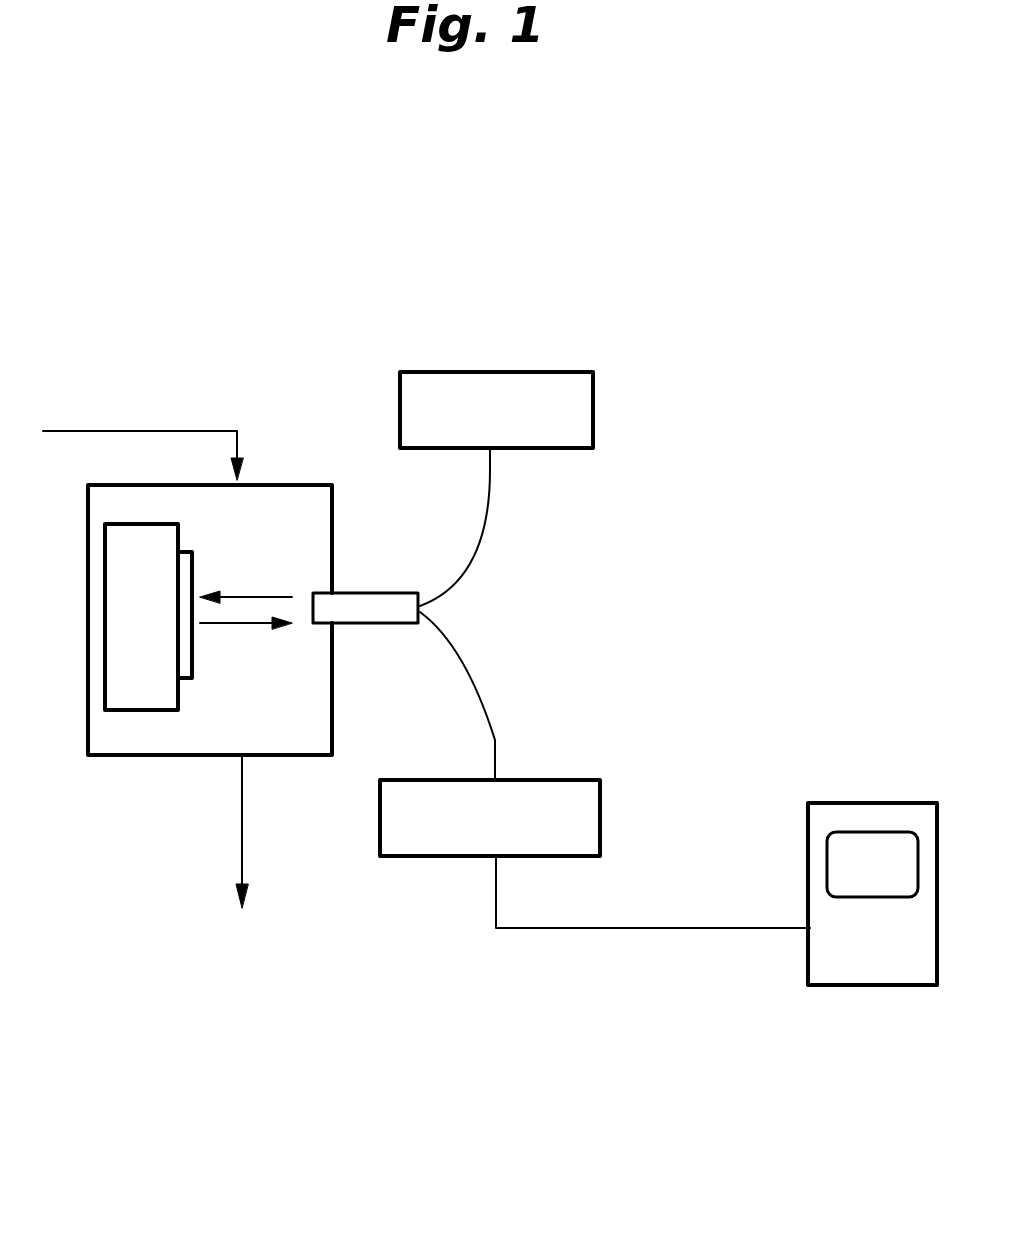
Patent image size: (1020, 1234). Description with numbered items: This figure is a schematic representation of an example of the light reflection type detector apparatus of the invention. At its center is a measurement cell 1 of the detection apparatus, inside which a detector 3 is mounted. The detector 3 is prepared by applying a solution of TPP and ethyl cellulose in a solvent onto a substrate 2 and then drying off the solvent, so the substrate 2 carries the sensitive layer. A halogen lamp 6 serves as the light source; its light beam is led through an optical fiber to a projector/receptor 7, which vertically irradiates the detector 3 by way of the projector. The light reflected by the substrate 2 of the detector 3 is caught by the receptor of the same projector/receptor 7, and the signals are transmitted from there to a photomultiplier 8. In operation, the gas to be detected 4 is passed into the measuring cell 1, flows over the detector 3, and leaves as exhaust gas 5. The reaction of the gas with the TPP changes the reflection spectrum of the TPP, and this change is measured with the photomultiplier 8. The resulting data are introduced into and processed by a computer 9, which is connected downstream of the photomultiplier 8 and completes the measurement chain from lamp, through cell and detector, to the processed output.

The measurement cell 1 is at (88, 512).
The substrate 2 is at (105, 693).
The detector 3 is at (194, 668).
The gas to be detected 4 is at (78, 431).
The exhaust gas 5 is at (242, 856).
The halogen lamp 6 is at (597, 398).
The projector/receptor 7 is at (384, 592).
The photomultiplier 8 is at (543, 778).
The computer 9 is at (856, 988).